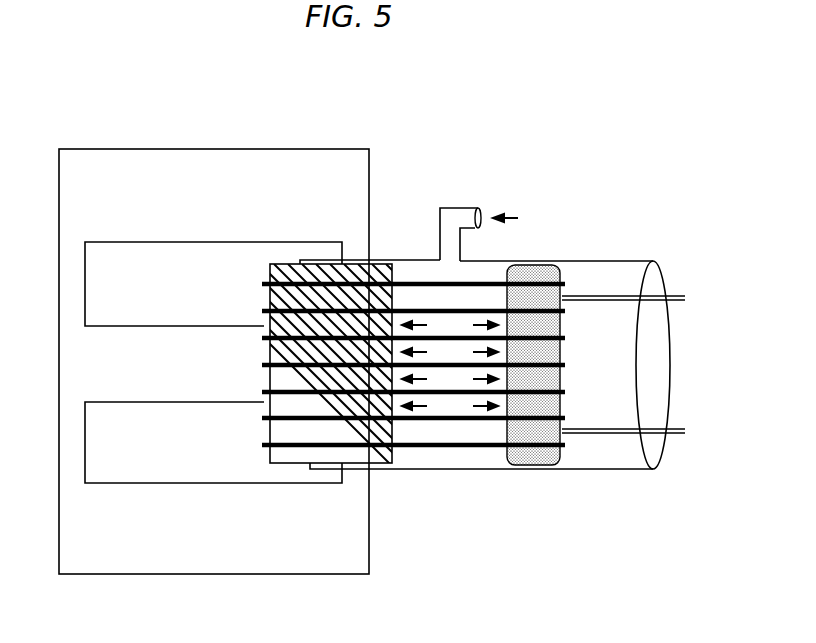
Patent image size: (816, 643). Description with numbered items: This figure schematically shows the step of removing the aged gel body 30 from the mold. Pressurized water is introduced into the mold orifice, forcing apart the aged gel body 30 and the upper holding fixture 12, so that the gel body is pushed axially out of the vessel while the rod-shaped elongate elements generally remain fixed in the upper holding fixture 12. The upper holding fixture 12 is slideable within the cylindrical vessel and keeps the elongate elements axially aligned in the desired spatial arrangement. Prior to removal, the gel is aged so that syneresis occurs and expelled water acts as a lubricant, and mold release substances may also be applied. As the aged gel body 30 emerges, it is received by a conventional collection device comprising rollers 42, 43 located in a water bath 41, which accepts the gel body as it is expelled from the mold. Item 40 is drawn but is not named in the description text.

The upper holding fixture 12 is at (532, 462).
The aged gel body 30 is at (316, 458).
The gas inlet pipe 40 is at (527, 210).
The water bath 41 is at (78, 564).
The roller 42 is at (148, 263).
The roller 43 is at (182, 458).